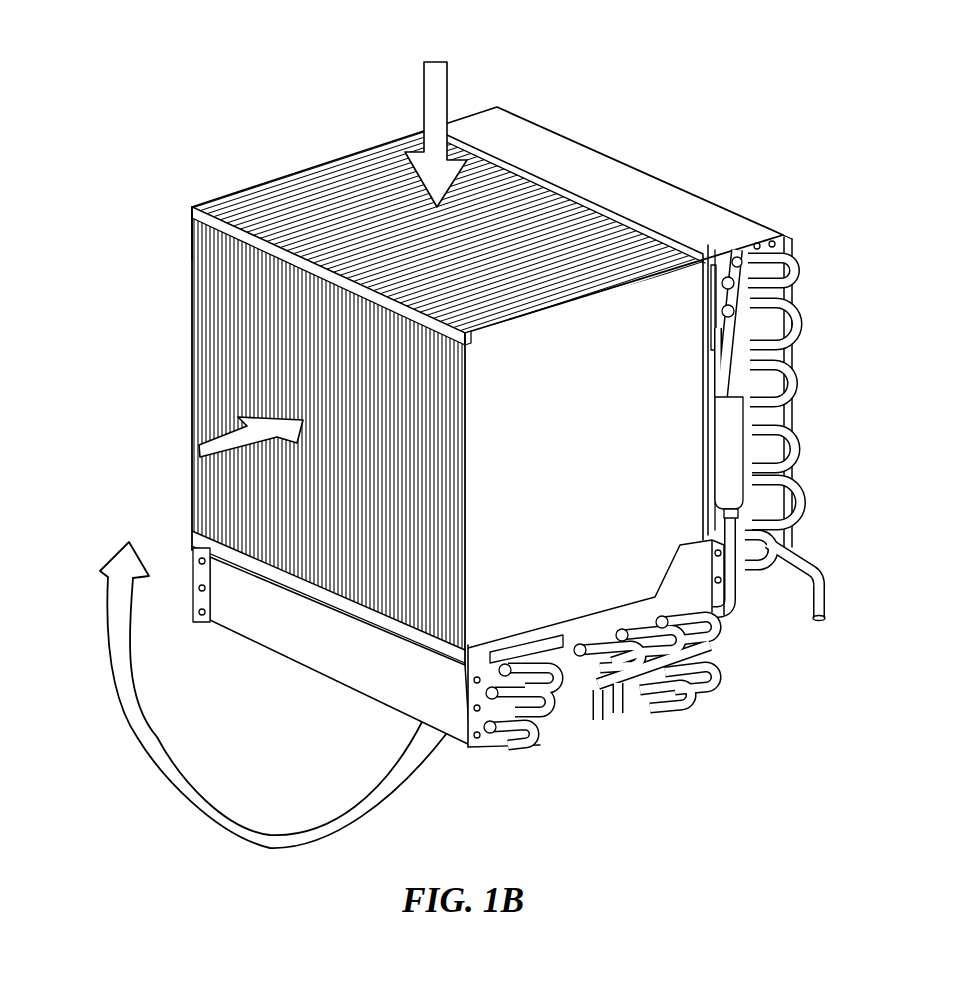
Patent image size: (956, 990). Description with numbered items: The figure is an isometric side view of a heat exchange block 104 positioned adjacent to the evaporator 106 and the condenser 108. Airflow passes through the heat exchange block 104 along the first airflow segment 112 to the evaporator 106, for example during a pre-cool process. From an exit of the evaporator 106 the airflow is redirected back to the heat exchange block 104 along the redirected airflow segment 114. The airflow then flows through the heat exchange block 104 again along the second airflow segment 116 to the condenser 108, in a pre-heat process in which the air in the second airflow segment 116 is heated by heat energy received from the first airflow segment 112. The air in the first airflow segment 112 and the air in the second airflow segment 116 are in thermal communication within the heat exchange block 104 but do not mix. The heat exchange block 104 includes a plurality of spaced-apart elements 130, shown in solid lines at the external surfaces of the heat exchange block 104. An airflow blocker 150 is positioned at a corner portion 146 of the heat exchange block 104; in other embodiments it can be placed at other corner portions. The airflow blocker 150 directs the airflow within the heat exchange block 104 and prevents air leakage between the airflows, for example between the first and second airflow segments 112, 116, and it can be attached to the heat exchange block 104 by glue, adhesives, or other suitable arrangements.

The heat exchange block 104 is at (305, 208).
The evaporator 106 is at (578, 703).
The condenser 108 is at (790, 372).
The first airflow segment 112 is at (430, 62).
The redirected airflow segment 114 is at (137, 760).
The second airflow segment 116 is at (193, 452).
The spaced-apart elements 130 is at (231, 338).
The corner portion 146 is at (177, 213).
The airflow blocker 150 is at (196, 211).